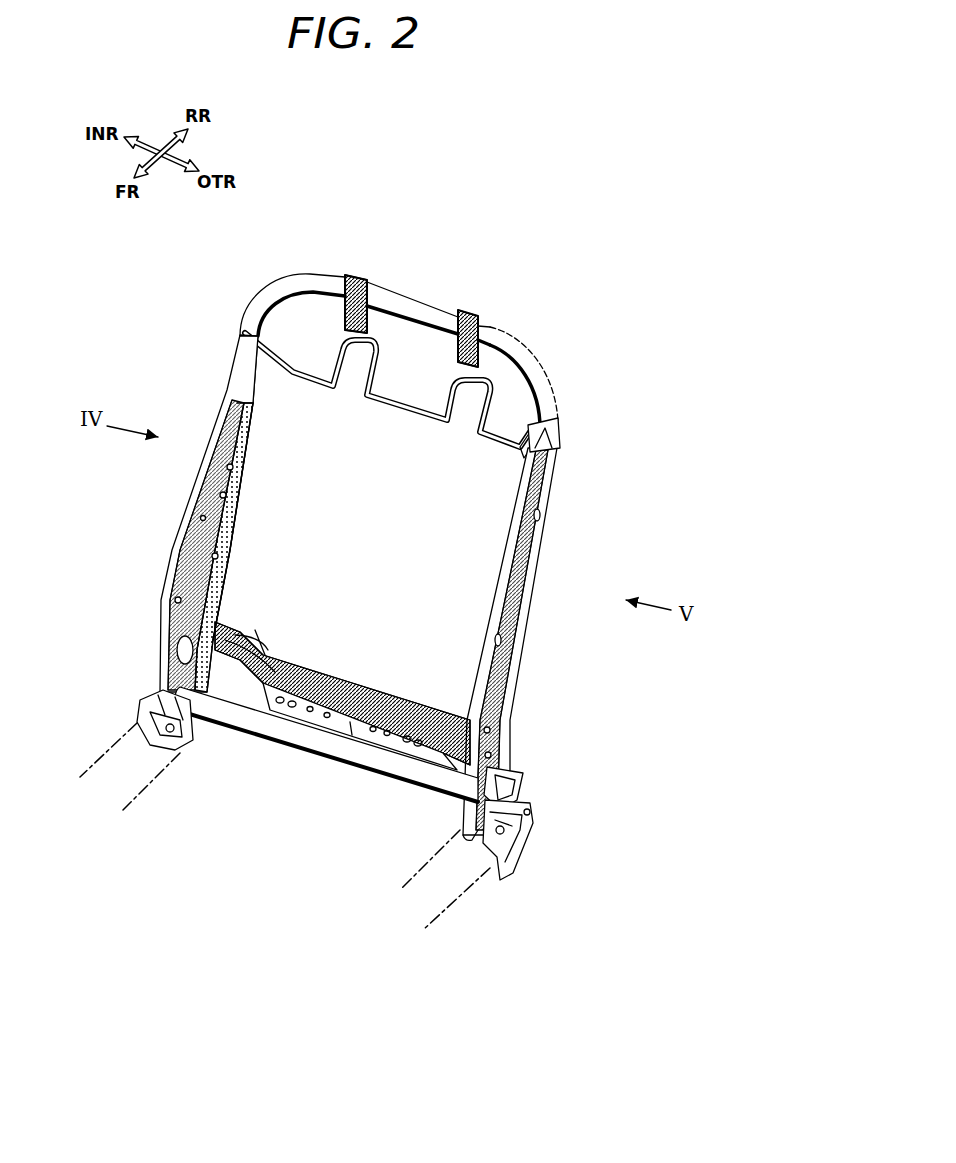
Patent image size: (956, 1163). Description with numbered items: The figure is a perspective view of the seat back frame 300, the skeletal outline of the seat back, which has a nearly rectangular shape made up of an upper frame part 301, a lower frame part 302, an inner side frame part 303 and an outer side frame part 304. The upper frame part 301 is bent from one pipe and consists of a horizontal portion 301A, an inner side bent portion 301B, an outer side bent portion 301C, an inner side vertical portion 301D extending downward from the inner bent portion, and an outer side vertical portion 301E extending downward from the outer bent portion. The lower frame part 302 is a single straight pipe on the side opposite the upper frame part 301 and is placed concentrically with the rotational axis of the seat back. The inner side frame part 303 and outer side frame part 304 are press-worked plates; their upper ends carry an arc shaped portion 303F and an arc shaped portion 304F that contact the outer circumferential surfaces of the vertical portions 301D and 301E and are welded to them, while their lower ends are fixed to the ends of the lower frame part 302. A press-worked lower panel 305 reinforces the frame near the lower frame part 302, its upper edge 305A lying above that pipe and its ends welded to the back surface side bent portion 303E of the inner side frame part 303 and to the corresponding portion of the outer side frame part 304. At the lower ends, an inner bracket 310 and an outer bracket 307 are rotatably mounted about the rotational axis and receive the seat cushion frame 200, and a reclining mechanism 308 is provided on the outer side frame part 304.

The seat cushion frame 200 is at (143, 793).
The seat back frame 300 is at (553, 300).
The upper frame part 301 is at (444, 305).
The horizontal portion 301A is at (410, 297).
The inner side bent portion 301B is at (312, 270).
The outer side bent portion 301C is at (548, 372).
The inner side vertical portion 301D is at (262, 372).
The outer side vertical portion 301E is at (525, 463).
The lower frame part 302 is at (305, 740).
The inner side frame part 303 is at (183, 527).
The back surface side bent portion 303E is at (228, 530).
The arc shaped portion 303F is at (238, 368).
The outer side frame part 304 is at (525, 615).
The arc shaped portion 304F is at (555, 465).
The lower panel 305 is at (398, 690).
The upper edge 305A is at (338, 675).
The outer bracket 307 is at (505, 828).
The reclining mechanism 308 is at (520, 793).
The inner bracket 310 is at (150, 705).